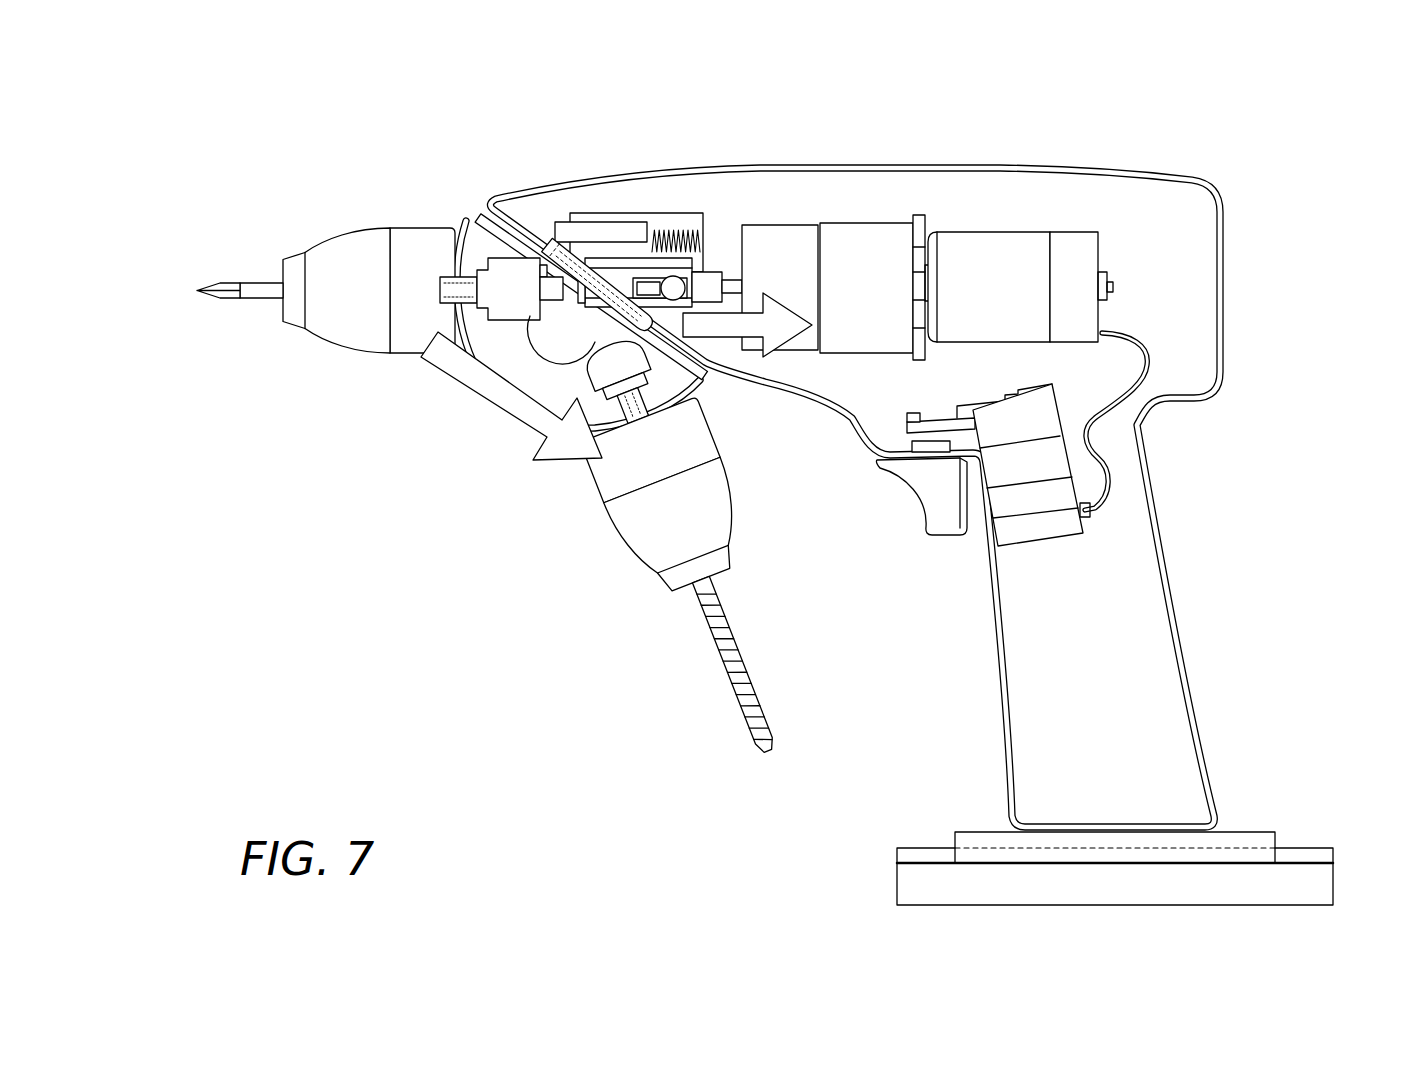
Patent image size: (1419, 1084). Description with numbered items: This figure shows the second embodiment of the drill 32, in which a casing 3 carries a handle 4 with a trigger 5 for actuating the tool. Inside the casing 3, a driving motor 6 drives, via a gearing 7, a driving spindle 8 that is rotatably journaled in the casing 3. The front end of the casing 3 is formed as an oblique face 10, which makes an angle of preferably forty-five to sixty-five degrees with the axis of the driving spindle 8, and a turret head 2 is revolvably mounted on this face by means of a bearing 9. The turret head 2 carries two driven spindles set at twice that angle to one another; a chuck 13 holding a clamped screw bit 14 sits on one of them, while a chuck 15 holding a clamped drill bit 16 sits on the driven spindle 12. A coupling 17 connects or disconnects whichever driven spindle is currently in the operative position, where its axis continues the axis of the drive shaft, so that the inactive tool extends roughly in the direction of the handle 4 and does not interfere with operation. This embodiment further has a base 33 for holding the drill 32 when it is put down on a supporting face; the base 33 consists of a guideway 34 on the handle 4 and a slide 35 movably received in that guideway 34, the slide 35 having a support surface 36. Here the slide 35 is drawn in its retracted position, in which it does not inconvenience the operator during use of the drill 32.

The turret head 2 is at (503, 416).
The casing 3 is at (1120, 172).
The handle 4 is at (1195, 705).
The trigger 5 is at (918, 503).
The driving motor 6 is at (988, 257).
The gearing 7 is at (880, 245).
The driving spindle 8 is at (785, 247).
The bearing 9 is at (545, 248).
The oblique face 10 is at (497, 199).
The driven spindle 12 is at (643, 440).
The chuck 13 is at (357, 353).
The screw bit 14 is at (228, 310).
The chuck 15 is at (647, 567).
The drill bit 16 is at (735, 718).
The coupling 17 is at (707, 268).
The drill 32 is at (1252, 311).
The base 33 is at (950, 815).
The guideway 34 is at (1258, 835).
The base 35 is at (891, 887).
The support surface 36 is at (1117, 907).